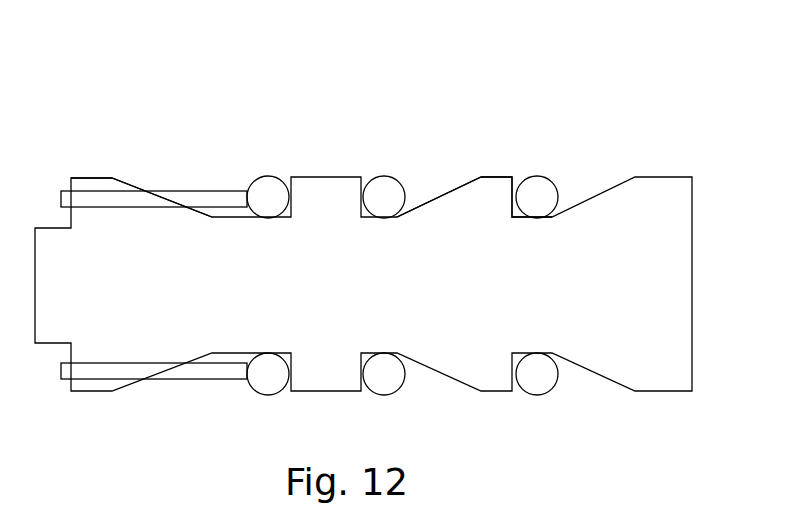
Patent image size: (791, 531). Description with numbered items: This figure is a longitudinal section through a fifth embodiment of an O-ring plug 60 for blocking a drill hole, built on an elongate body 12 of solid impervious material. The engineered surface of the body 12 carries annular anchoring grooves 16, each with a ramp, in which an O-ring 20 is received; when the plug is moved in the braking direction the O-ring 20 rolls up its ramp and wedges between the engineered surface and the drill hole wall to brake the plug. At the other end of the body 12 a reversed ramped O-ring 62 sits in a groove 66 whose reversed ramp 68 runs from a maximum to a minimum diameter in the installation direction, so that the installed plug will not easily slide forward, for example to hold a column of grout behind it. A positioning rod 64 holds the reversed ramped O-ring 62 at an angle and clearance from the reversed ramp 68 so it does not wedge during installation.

The elongate body 12 is at (672, 309).
The annular anchoring groove 16 is at (428, 188).
The O-ring 20 is at (387, 181).
The O-ring plug 60 is at (551, 166).
The reversed ramped O-ring 62 is at (269, 177).
The positioning rod 64 is at (165, 190).
The groove 66 is at (198, 178).
The reversed ramp 68 is at (116, 181).